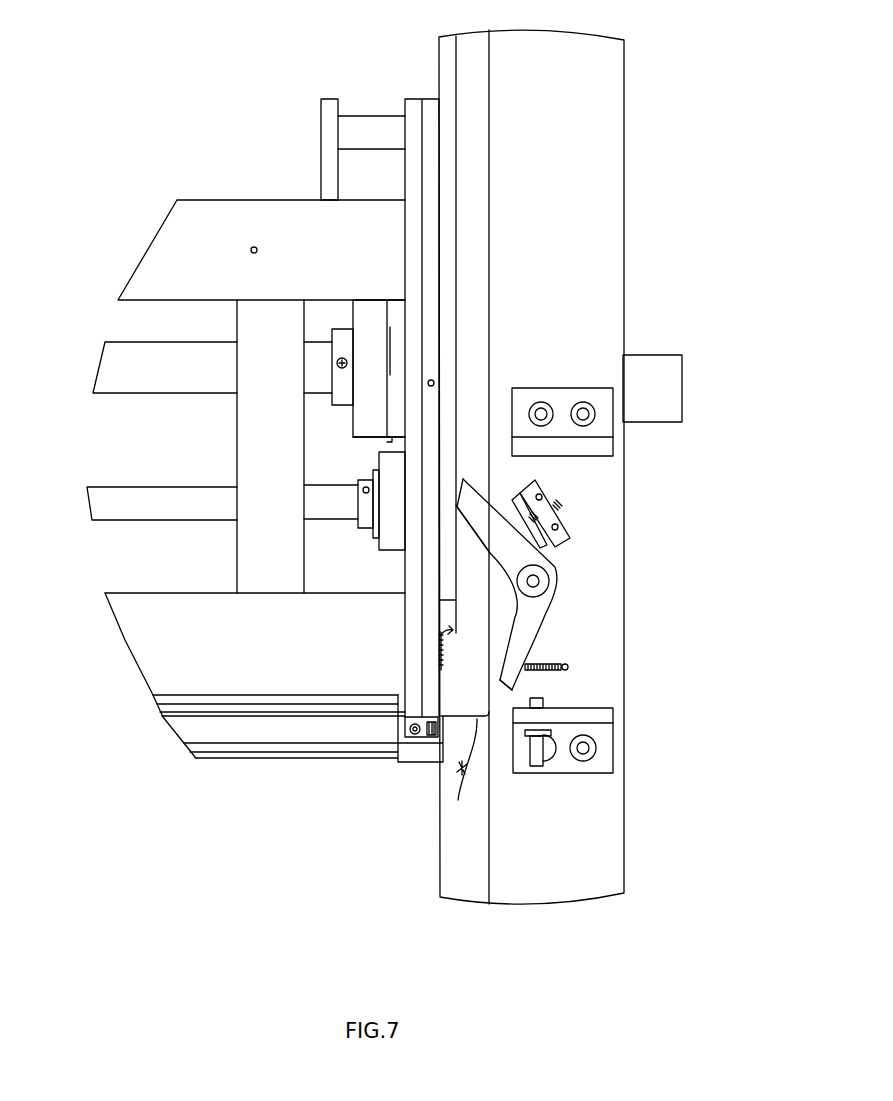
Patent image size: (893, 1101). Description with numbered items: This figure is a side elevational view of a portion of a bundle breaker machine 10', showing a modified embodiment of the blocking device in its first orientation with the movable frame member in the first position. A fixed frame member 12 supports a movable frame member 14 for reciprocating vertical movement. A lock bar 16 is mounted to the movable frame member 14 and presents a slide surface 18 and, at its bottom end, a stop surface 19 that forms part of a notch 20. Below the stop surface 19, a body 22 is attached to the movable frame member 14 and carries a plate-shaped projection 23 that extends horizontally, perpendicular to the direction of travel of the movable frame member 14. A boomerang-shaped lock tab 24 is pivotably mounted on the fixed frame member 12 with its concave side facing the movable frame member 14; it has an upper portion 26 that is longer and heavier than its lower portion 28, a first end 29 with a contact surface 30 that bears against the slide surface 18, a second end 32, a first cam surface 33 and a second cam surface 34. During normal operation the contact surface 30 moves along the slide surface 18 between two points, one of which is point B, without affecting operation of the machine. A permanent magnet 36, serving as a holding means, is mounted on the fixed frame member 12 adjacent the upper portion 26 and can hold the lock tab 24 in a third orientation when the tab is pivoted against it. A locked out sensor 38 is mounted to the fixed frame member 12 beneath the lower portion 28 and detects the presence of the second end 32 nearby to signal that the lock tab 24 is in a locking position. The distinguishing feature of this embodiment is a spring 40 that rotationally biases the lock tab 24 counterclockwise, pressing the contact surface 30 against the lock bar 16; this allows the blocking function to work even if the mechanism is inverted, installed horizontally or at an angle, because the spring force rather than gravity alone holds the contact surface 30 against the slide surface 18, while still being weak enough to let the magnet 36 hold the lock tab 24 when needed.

The machine 10' is at (246, 312).
The fixed frame member 12 is at (600, 70).
The movable frame member 14 is at (430, 118).
The lock bar 16 is at (447, 207).
The slide surface 18 is at (455, 306).
The stop surface 19 is at (440, 636).
The notch 20 is at (440, 657).
The body 22 is at (450, 720).
The plate-shaped projection 23 is at (458, 800).
The lock tab 24 is at (513, 550).
The upper portion 26 is at (490, 518).
The lower portion 28 is at (527, 633).
The first end 29 is at (490, 522).
The contact surface 30 is at (458, 508).
The second end 32 is at (507, 687).
The first cam surface 33 is at (485, 556).
The second cam surface 34 is at (517, 618).
The permanent magnet 36 is at (540, 483).
The locked out sensor 38 is at (543, 697).
The spring 40 is at (568, 663).
The point B is at (455, 600).